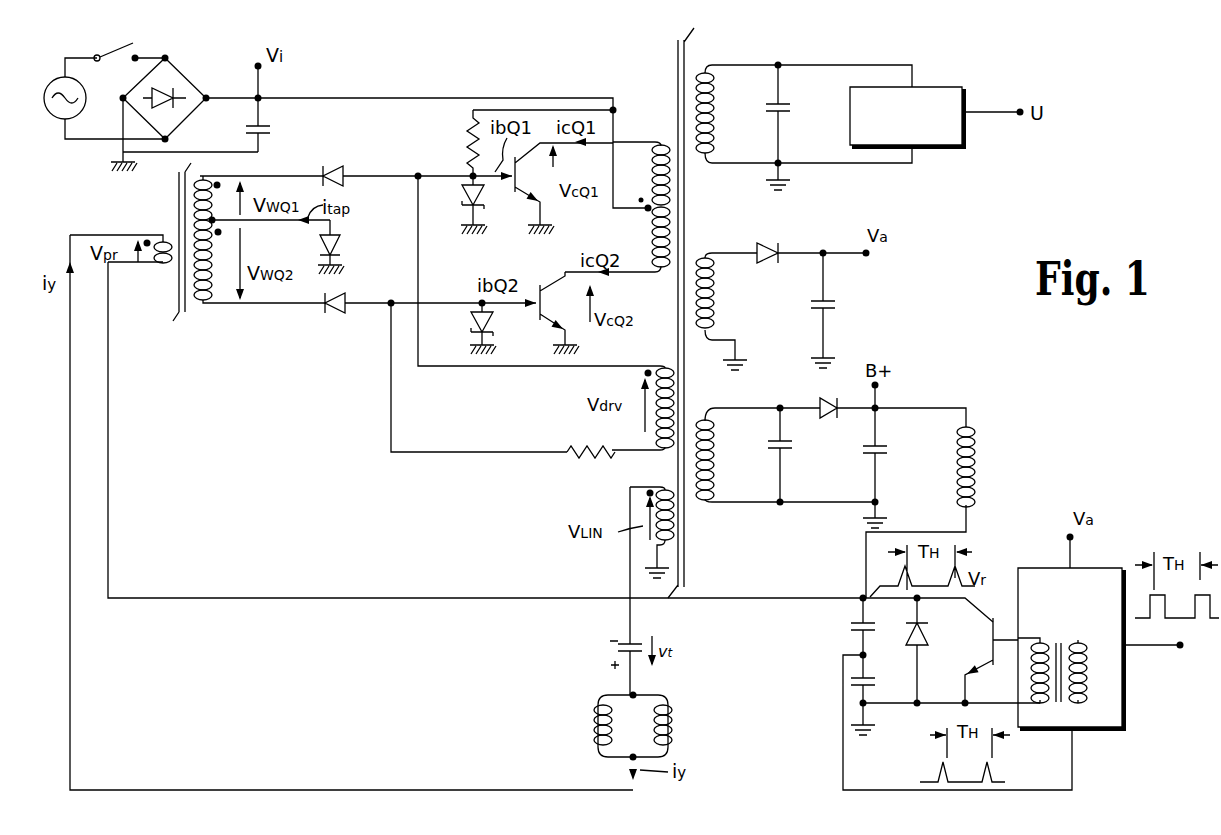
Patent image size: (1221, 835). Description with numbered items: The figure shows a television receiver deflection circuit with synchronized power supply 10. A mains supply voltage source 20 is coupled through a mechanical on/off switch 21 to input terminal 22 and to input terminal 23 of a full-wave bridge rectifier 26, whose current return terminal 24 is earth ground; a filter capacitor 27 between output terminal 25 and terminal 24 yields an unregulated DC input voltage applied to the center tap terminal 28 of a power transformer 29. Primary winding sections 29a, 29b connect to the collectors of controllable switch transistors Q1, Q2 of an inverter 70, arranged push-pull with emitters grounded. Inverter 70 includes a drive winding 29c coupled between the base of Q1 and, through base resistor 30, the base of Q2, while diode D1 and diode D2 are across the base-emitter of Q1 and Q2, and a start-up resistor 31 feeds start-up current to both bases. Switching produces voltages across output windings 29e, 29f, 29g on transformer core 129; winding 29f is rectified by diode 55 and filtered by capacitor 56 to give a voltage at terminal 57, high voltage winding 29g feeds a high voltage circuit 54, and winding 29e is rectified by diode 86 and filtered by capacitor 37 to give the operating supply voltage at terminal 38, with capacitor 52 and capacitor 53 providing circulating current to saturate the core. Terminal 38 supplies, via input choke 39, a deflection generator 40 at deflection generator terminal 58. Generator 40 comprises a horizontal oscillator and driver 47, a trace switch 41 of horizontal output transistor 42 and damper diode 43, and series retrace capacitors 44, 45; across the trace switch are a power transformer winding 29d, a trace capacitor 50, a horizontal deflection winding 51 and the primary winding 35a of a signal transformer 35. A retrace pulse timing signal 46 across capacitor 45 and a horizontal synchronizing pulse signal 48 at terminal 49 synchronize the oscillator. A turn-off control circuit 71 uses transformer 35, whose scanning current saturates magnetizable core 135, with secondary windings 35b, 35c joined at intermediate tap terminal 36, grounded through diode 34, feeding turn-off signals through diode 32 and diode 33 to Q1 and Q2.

The television receiver deflection circuit with synchronized power supply 10 is at (987, 356).
The mains supply voltage source 20 is at (58, 84).
The mechanical on/off switch 21 is at (119, 57).
The input terminal 22 is at (167, 58).
The input terminal 23 is at (170, 139).
The current return terminal 24 is at (122, 97).
The output terminal 25 is at (206, 98).
The full-wave bridge rectifier 26 is at (194, 110).
The filter capacitor 27 is at (270, 131).
The center tap terminal 28 is at (641, 199).
The power transformer 29 is at (667, 66).
The primary winding section 29a is at (661, 140).
The primary winding section 29b is at (656, 241).
The drive winding 29c is at (666, 364).
The power transformer winding 29d is at (662, 484).
The output winding 29e is at (714, 432).
The output winding 29f is at (712, 296).
The high voltage winding 29g is at (711, 87).
The base resistor 30 is at (573, 450).
The start-up resistor 31 is at (468, 136).
The diode 32 is at (344, 169).
The diode 33 is at (352, 314).
The diode 34 is at (341, 243).
The signal transformer 35 is at (170, 200).
The primary winding 35a is at (169, 262).
The secondary winding 35b is at (200, 176).
The secondary winding 35c is at (204, 313).
The intermediate tap terminal 36 is at (270, 210).
The capacitor 37 is at (888, 451).
The terminal 38 is at (882, 405).
The input choke 39 is at (975, 452).
The deflection generator 40 is at (1033, 548).
The trace switch 41 is at (980, 653).
The horizontal output transistor 42 is at (990, 614).
The damper diode 43 is at (926, 638).
The retrace capacitor 44 is at (852, 629).
The retrace capacitor 45 is at (872, 685).
The retrace pulse timing signal 46 is at (996, 777).
The horizontal oscillator and driver 47 is at (1092, 570).
The horizontal synchronizing pulse signal 48 is at (1167, 634).
The terminal 49 is at (1167, 661).
The trace capacitor 50 is at (614, 651).
The horizontal deflection winding 51 is at (593, 720).
The capacitor 52 is at (787, 445).
The capacitor 53 is at (786, 104).
The high voltage circuit 54 is at (956, 82).
The diode 55 is at (778, 243).
The capacitor 56 is at (832, 307).
The terminal 57 is at (868, 256).
The deflection generator terminal 58 is at (862, 596).
The inverter 70 is at (598, 240).
The turn-off control circuit 71 is at (297, 253).
The diode 86 is at (818, 403).
The transformer core 129 is at (687, 211).
The magnetizable core 135 is at (178, 304).
The diode D1 is at (462, 196).
The diode D2 is at (470, 323).
The controllable switch transistor Q1 is at (543, 189).
The controllable switch transistor Q2 is at (559, 313).